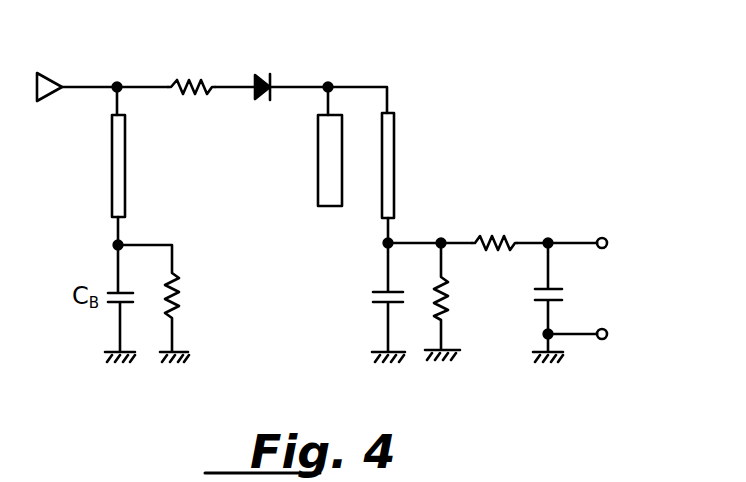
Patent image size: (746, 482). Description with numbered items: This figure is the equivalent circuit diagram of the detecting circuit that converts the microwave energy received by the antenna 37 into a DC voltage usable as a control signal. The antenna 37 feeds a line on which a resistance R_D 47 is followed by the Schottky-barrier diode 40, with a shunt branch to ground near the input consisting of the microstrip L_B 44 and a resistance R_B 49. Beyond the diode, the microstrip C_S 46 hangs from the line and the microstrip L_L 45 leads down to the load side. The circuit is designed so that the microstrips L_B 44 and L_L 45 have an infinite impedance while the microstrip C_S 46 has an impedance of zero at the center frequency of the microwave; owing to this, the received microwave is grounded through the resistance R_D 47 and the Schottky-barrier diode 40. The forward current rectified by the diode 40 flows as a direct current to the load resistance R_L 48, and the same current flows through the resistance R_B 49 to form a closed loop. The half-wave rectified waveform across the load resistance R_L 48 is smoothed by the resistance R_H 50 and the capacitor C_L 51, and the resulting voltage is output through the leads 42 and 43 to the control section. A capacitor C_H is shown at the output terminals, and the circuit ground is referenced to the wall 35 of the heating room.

The antenna 37 is at (45, 72).
The resistance R_D 47 is at (180, 95).
The Schottky-barrier diode 40 is at (272, 76).
The microstrip L_B 44 is at (115, 166).
The resistance R_B 49 is at (178, 313).
The microstrip C_S 46 is at (333, 200).
The microstrip L_L 45 is at (390, 145).
The capacitor C_L 51 is at (378, 305).
The load resistance R_L 48 is at (447, 315).
The resistance R_H 50 is at (515, 235).
The lead 43 is at (608, 239).
The wall 35 is at (542, 301).
The lead 42 is at (608, 331).